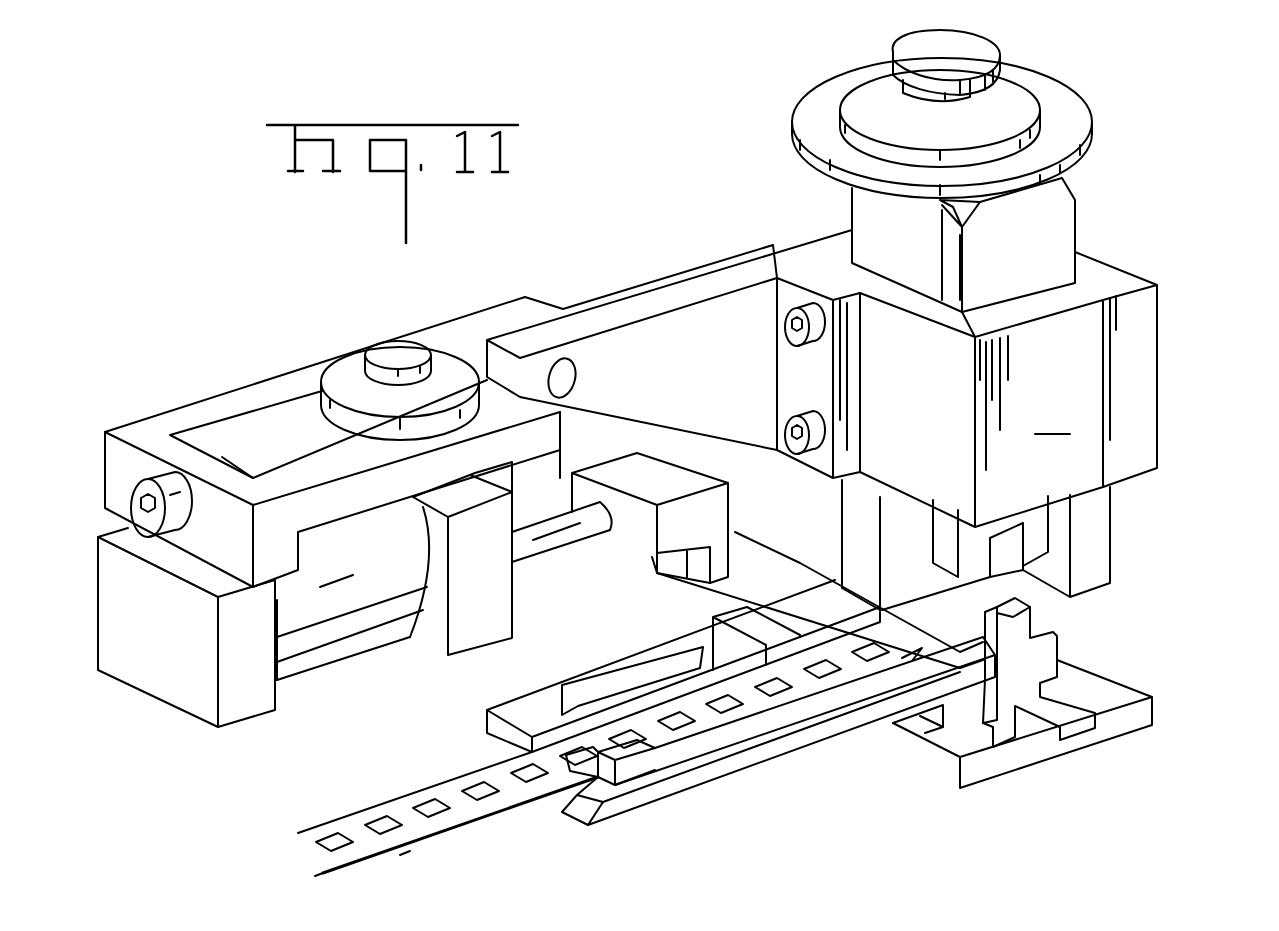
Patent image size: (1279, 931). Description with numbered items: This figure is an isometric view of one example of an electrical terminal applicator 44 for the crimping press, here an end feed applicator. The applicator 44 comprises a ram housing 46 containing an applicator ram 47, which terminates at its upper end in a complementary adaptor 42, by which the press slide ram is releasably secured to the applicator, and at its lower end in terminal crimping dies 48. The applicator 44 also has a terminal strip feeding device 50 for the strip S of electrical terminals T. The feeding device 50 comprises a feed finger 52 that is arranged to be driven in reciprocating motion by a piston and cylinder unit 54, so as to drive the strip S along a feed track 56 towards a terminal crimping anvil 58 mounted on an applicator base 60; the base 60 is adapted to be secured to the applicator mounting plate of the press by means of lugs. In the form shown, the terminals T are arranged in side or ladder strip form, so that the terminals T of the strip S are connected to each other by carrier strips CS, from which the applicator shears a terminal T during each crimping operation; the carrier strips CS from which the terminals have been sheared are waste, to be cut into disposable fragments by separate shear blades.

The complementary adaptor 42 is at (952, 50).
The electrical terminal applicator 44 is at (1064, 389).
The ram housing 46 is at (1052, 417).
The applicator ram 47 is at (870, 229).
The terminal crimping dies 48 is at (1043, 528).
The terminal strip feeding device 50 is at (253, 391).
The feed finger 52 is at (820, 597).
The piston and cylinder unit 54 is at (345, 643).
The feed track 56 is at (745, 772).
The terminal crimping anvil 58 is at (1022, 620).
The applicator base 60 is at (1052, 752).
The strip S is at (375, 850).
The electrical terminals T is at (445, 787).
The carrier strips CS is at (533, 797).